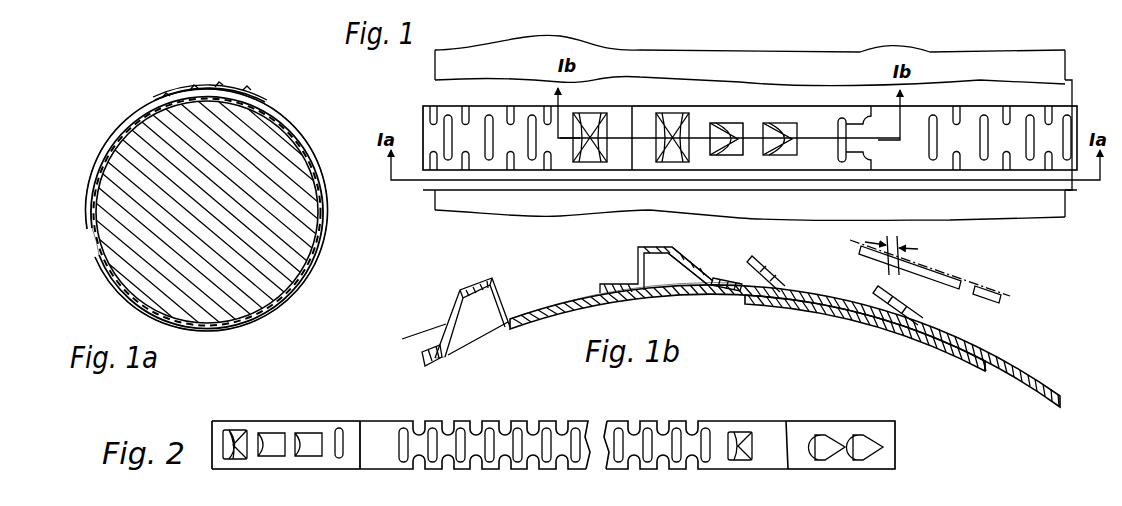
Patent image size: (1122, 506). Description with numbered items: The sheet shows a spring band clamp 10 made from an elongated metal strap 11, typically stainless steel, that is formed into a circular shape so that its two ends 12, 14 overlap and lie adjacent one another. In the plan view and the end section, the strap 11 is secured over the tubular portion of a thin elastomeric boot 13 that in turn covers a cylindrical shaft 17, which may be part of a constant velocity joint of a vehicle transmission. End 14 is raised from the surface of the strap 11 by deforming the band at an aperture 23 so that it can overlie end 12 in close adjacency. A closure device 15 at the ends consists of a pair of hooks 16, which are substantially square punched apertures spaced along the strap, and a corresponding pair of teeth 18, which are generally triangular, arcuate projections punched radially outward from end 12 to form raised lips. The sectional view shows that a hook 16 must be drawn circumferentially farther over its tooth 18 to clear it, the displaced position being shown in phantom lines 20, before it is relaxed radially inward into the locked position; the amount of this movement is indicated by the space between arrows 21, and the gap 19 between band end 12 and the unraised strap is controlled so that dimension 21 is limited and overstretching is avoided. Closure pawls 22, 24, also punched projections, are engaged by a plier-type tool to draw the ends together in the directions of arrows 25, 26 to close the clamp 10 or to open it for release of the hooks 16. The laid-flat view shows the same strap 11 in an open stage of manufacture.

In FIG. 1A, the spring band clamp 10 is at (298, 289).
In FIG. 1, the spring band clamp 10 is at (430, 105).
In FIG. 2, the spring band clamp 10 is at (339, 419).
In FIG. 1A, the strap 11 is at (320, 256).
In FIG. 1, the strap 11 is at (995, 106).
In FIG. 1B, the strap 11 is at (1038, 385).
In FIG. 2, the strap 11 is at (398, 420).
In FIG. 1A, the end 12 is at (143, 123).
In FIG. 1, the end 12 is at (607, 103).
In FIG. 1B, the end 12 is at (573, 295).
In FIG. 2, the end 12 is at (838, 423).
In FIG. 1A, the elastomeric boot 13 is at (280, 108).
In FIG. 1, the elastomeric boot 13 is at (471, 80).
In FIG. 1A, the end 14 is at (245, 97).
In FIG. 1, the end 14 is at (728, 122).
In FIG. 1B, the end 14 is at (975, 352).
In FIG. 2, the end 14 is at (262, 420).
In FIG. 1A, the closure device 15 is at (197, 78).
In FIG. 1, the closure device 15 is at (679, 94).
In FIG. 1, the hook 16 is at (765, 157).
In FIG. 1B, the hook 16 is at (752, 292).
In FIG. 2, the hook 16 is at (310, 456).
In FIG. 1A, the cylindrical shaft 17 is at (305, 229).
In FIG. 1, the cylindrical shaft 17 is at (505, 50).
In FIG. 1, the tooth 18 is at (790, 124).
In FIG. 1B, the tooth 18 is at (778, 292).
In FIG. 2, the tooth 18 is at (870, 458).
In FIG. 1B, the gap 19 is at (981, 368).
In FIG. 1B, the phantom-line hook position 20 is at (985, 285).
In FIG. 1B, the arrows indicating dimension of hook movement 21 is at (912, 249).
In FIG. 1, the closure pawl 22 is at (590, 155).
In FIG. 1B, the closure pawl 22 is at (478, 283).
In FIG. 2, the closure pawl 22 is at (745, 432).
In FIG. 1, the aperture 23 is at (841, 118).
In FIG. 2, the aperture 23 is at (341, 428).
In FIG. 1, the closure pawl 24 is at (675, 155).
In FIG. 1B, the closure pawl 24 is at (655, 247).
In FIG. 2, the closure pawl 24 is at (228, 430).
In FIG. 1B, the arrow 25 is at (447, 321).
In FIG. 1B, the arrow 26 is at (693, 255).